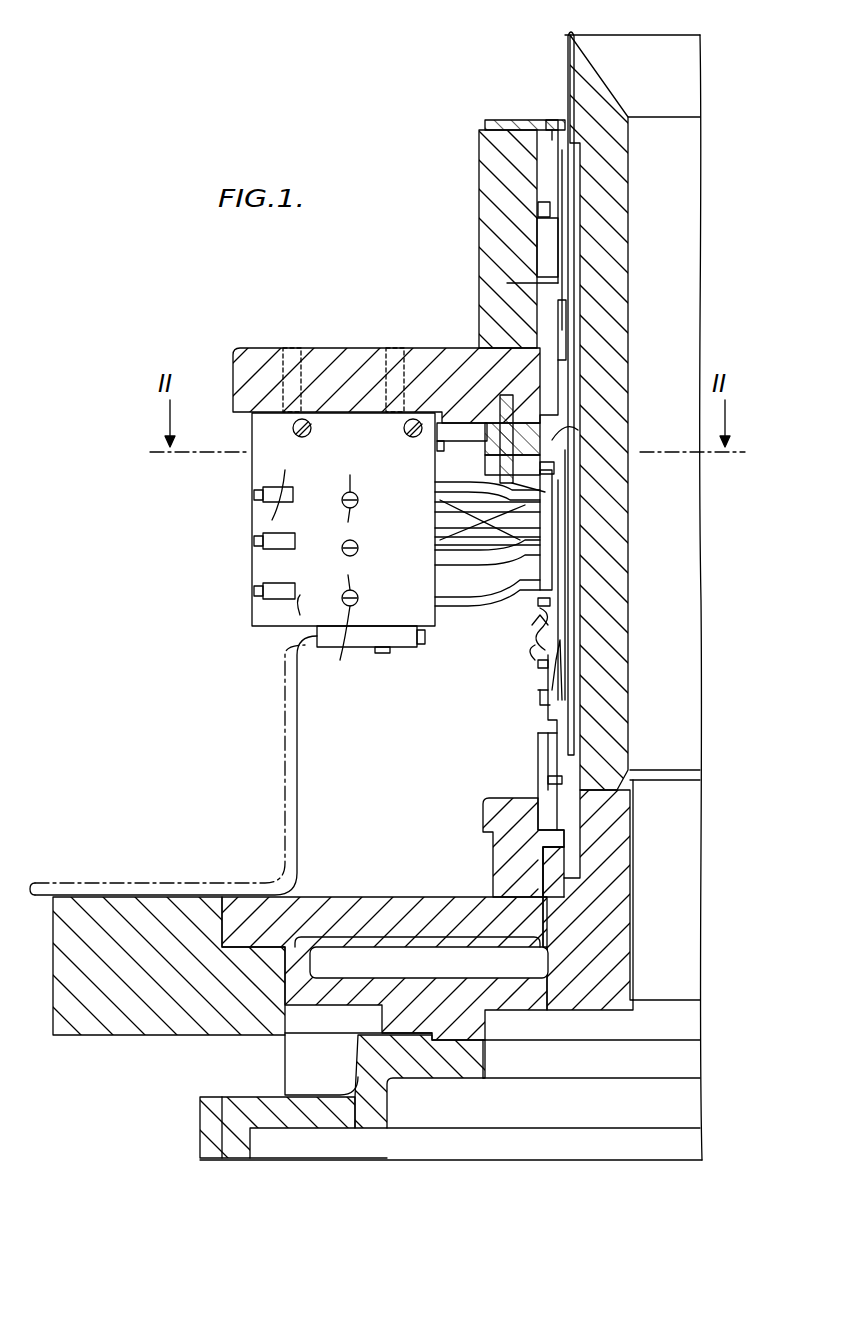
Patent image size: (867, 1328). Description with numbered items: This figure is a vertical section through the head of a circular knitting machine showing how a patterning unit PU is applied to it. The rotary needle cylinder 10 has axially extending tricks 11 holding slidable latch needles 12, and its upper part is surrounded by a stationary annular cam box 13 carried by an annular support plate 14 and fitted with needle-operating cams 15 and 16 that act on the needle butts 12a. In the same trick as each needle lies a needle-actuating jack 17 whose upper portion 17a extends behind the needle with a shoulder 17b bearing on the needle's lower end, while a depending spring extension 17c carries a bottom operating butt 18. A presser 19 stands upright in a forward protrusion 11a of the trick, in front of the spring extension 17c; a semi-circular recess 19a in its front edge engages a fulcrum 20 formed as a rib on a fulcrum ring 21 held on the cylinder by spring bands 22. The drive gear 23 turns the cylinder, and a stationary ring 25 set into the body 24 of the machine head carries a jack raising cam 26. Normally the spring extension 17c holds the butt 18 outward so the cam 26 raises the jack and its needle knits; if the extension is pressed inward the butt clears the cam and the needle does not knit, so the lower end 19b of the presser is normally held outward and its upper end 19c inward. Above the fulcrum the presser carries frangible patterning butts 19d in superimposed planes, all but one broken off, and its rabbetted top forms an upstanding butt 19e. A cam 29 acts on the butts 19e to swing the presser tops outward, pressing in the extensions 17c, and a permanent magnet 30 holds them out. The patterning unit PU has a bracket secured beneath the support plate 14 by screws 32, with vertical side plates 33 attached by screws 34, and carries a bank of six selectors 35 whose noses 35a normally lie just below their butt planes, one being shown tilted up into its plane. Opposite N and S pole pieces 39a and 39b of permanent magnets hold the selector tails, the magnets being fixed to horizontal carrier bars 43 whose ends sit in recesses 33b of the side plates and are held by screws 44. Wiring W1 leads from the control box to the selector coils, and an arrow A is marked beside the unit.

The rotary needle cylinder 10 is at (612, 386).
The cylinder trick 11 is at (598, 165).
The forward protrusion of cylinder trick 11a is at (543, 695).
The latch needle 12 is at (568, 72).
The needle butt 12a is at (553, 207).
The stationary annular cam box 13 is at (497, 245).
The annular support plate 14 is at (320, 348).
The needle-operating cam 15 is at (552, 128).
The needle-operating cam 16 is at (544, 228).
The needle-actuating jack 17 is at (574, 366).
The upper portion of jack 17a is at (575, 254).
The shoulder 17b is at (566, 350).
The depending spring extension 17c is at (567, 580).
The bottom operating butt 18 is at (548, 778).
The presser 19 is at (498, 585).
The semi-circular recess 19a is at (552, 628).
The lower end of presser 19b is at (565, 680).
The upper end of presser 19c is at (556, 470).
The frangible patterning butts 19d is at (552, 545).
The upstanding butt 19e is at (560, 430).
The fulcrum 20 is at (530, 650).
The fulcrum ring 21 is at (540, 660).
The spring bands 22 is at (552, 605).
The drive gear 23 is at (250, 1097).
The body of machine head 24 is at (146, 1036).
The stationary ring 25 is at (493, 845).
The jack raising cam 26 is at (538, 745).
The cam 29 is at (527, 460).
The permanent magnet 30 is at (462, 447).
The screws 32 is at (370, 348).
The vertical side plates 33 is at (303, 630).
The recesses 33b is at (270, 487).
The screws 34 is at (312, 428).
The selector 35 is at (342, 500).
The operative nose of selector 35a is at (548, 492).
The N pole piece 39a is at (335, 515).
The S pole piece 39b is at (331, 592).
The horizontal carrier bars 43 is at (292, 542).
The screws 44 is at (254, 494).
The direction of insertion A is at (205, 575).
The patterning unit PU is at (246, 635).
The wiring W1 is at (152, 882).